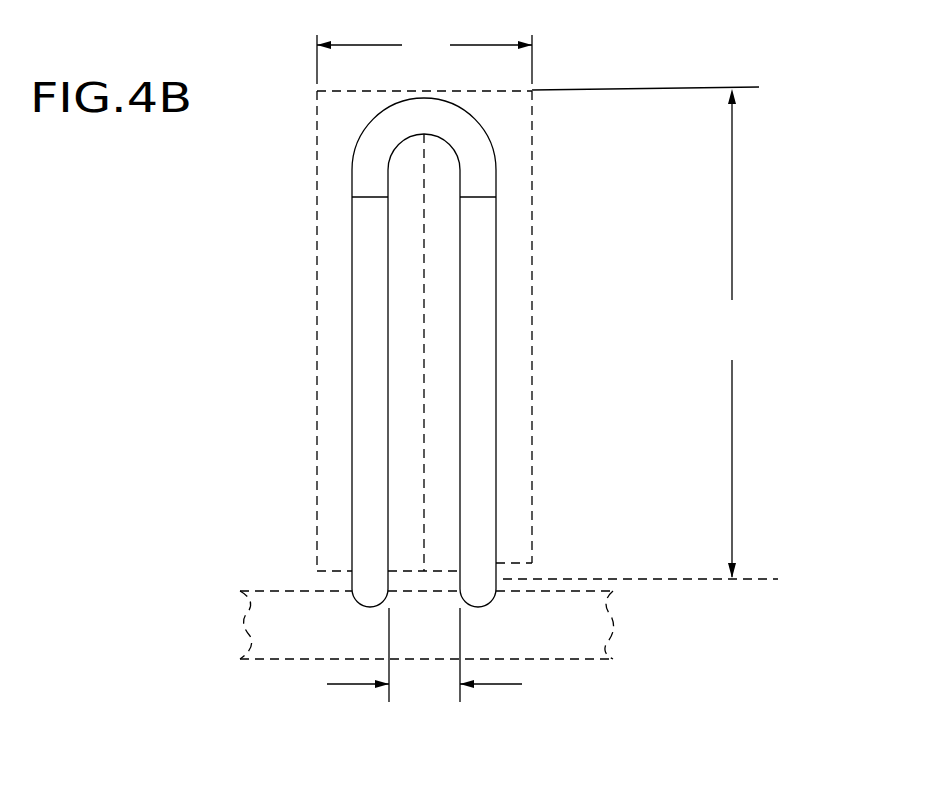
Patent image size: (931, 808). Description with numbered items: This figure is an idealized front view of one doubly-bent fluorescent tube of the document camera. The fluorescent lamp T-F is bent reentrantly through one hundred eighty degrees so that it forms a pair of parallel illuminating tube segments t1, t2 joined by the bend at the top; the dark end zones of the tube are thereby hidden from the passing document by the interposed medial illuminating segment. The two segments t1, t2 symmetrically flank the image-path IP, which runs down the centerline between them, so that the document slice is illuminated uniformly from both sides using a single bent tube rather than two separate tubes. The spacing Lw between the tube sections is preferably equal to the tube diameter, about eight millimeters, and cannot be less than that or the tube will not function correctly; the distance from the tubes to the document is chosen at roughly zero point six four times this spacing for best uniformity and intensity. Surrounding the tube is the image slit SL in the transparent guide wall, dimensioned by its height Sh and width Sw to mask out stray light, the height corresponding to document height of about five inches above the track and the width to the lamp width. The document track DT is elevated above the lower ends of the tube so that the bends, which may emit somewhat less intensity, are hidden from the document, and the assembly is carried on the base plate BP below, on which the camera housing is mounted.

The fluorescent lamp T-F is at (300, 368).
The image-path IP is at (422, 224).
The image slit SL is at (497, 417).
The first illuminating tube segment t1 is at (485, 259).
The second illuminating tube segment t2 is at (363, 447).
The base plate BP is at (240, 617).
The document track DT is at (802, 568).
The slit width Sw is at (424, 59).
The slit height Sh is at (645, 332).
The tube section spacing Lw is at (445, 655).